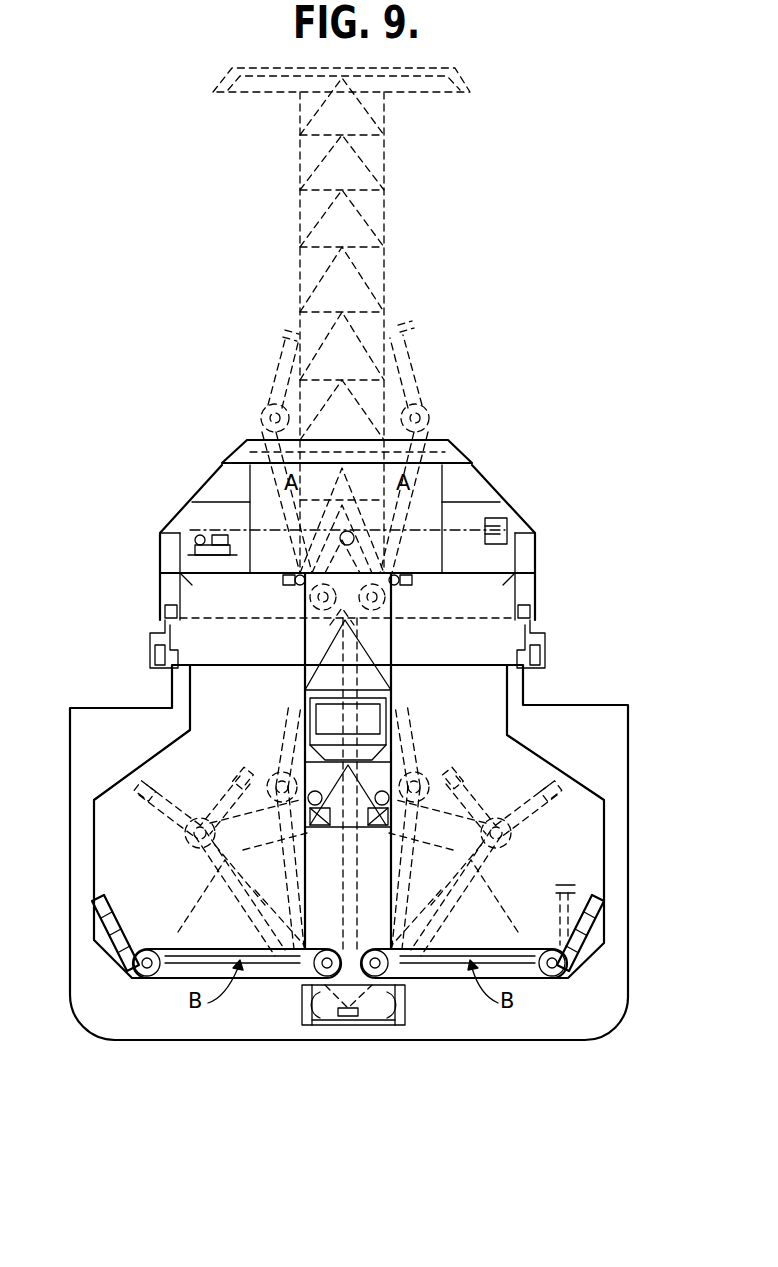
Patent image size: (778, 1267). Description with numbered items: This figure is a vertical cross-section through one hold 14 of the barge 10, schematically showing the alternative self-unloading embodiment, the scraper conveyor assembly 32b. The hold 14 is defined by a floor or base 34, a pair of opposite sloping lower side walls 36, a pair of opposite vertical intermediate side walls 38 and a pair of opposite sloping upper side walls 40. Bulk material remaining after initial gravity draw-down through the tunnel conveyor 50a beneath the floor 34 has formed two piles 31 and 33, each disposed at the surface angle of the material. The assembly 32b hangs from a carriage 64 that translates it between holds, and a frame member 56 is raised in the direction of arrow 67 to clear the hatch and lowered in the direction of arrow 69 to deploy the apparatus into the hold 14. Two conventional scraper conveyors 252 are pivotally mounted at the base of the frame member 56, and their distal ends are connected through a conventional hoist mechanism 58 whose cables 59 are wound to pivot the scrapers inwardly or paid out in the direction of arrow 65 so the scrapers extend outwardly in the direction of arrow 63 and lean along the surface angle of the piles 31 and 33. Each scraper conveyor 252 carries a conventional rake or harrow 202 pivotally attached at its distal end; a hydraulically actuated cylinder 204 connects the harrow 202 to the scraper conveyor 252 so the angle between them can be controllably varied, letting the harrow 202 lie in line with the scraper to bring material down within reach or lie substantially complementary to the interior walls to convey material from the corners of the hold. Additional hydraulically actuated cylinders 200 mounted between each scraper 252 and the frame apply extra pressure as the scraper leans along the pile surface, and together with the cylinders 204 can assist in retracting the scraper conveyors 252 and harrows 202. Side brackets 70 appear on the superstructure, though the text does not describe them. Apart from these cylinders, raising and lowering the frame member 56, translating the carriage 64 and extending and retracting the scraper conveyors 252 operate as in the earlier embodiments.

The barge 10 is at (438, 343).
The hold 14 is at (640, 745).
The pile 31 is at (138, 870).
The scraper conveyor assembly 32b is at (489, 447).
The pile 33 is at (549, 876).
The floor 34 is at (428, 980).
The sloping lower side walls 36 is at (115, 962).
The vertical intermediate side walls 38 is at (96, 884).
The sloping upper side walls 40 is at (168, 765).
The tunnel conveyor 50a is at (303, 1004).
The frame member 56 is at (300, 680).
The hoist mechanism 58 is at (370, 795).
The cables 59 is at (272, 840).
The arrow 63 is at (202, 775).
The carriage 64 is at (490, 480).
The arrow 65 is at (197, 878).
The arrow 67 is at (401, 670).
The arrow 69 is at (293, 668).
The side bracket 70 is at (150, 644).
The hydraulically actuated cylinders 200 is at (262, 925).
The harrow 202 is at (153, 822).
The hydraulically actuated cylinder 204 is at (205, 946).
The scraper conveyor 252 is at (262, 950).